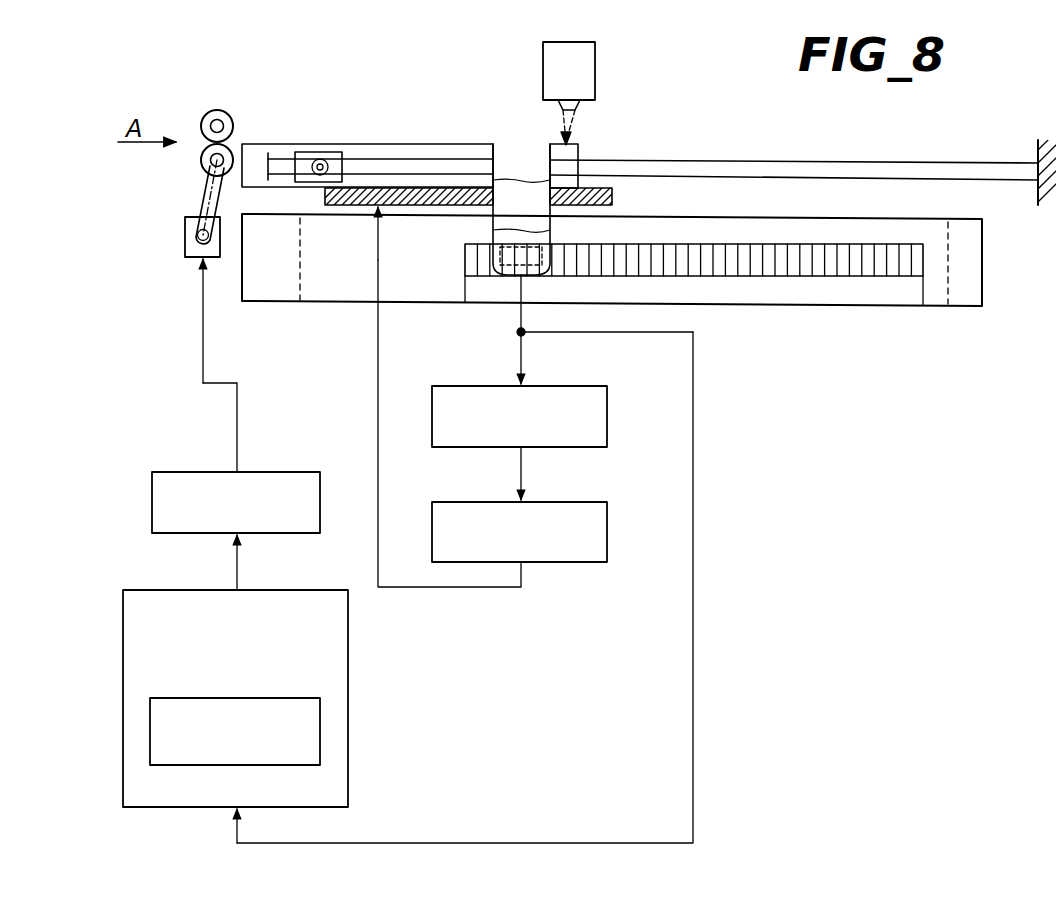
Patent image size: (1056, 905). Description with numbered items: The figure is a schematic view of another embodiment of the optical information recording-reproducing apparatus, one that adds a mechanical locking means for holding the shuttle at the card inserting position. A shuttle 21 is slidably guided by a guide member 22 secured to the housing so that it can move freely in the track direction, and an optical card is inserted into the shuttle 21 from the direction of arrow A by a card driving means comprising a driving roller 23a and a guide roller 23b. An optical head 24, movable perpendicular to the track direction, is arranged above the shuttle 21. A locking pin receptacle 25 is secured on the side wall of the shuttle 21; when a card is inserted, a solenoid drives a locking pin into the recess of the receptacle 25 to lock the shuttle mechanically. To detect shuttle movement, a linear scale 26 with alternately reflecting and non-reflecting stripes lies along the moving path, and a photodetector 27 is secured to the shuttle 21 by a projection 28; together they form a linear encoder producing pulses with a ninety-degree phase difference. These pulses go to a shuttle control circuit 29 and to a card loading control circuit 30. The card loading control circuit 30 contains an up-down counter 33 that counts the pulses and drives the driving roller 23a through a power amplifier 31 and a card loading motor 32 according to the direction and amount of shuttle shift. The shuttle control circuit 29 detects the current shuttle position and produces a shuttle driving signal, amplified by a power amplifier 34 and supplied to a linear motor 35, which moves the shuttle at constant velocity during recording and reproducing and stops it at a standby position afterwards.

The shuttle 21 is at (288, 144).
The guide member 22 is at (856, 160).
The driving roller 23a is at (228, 147).
The guide roller 23b is at (208, 113).
The optical head 24 is at (595, 80).
The locking pin receptacle 25 is at (333, 152).
The linear scale 26 is at (795, 278).
The photodetector 27 is at (502, 247).
The projection 28 is at (542, 200).
The shuttle control circuit 29 is at (607, 425).
The card loading control circuit 30 is at (348, 650).
The power amplifier 31 is at (320, 485).
The card loading motor 32 is at (185, 243).
The up-down counter 33 is at (320, 733).
The power amplifier 34 is at (607, 530).
The linear motor 35 is at (448, 188).